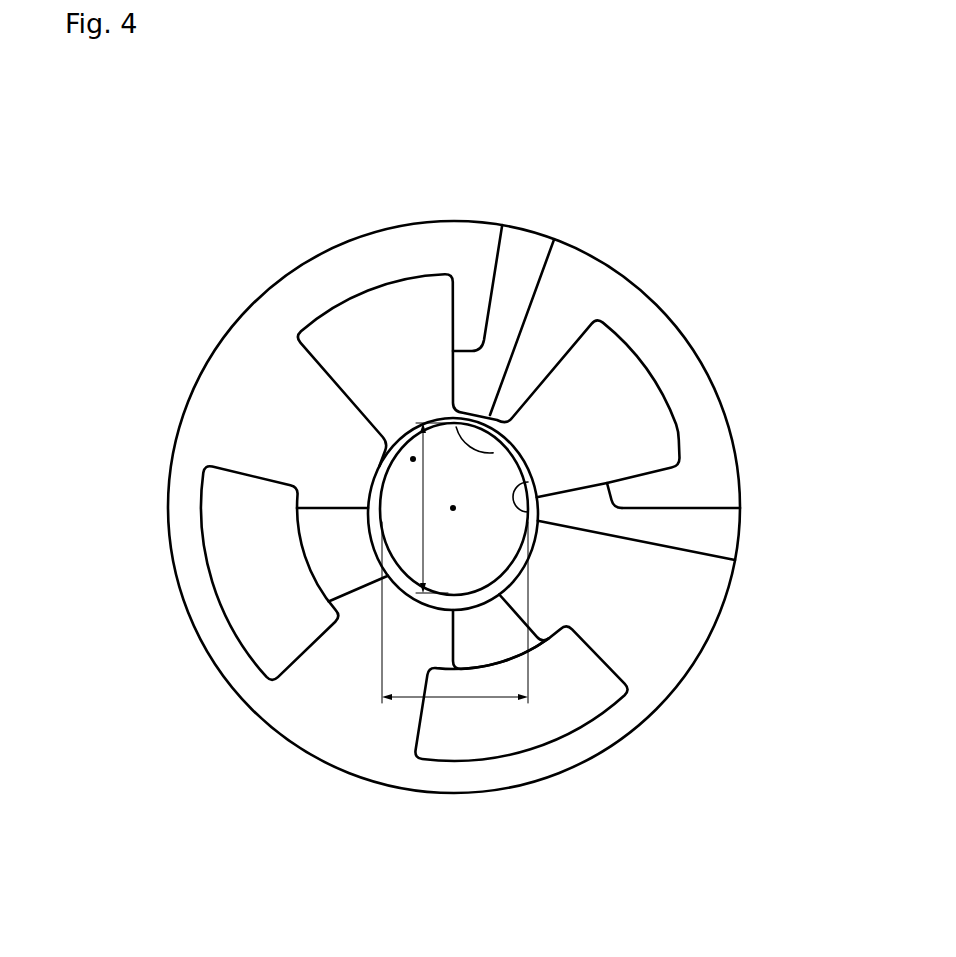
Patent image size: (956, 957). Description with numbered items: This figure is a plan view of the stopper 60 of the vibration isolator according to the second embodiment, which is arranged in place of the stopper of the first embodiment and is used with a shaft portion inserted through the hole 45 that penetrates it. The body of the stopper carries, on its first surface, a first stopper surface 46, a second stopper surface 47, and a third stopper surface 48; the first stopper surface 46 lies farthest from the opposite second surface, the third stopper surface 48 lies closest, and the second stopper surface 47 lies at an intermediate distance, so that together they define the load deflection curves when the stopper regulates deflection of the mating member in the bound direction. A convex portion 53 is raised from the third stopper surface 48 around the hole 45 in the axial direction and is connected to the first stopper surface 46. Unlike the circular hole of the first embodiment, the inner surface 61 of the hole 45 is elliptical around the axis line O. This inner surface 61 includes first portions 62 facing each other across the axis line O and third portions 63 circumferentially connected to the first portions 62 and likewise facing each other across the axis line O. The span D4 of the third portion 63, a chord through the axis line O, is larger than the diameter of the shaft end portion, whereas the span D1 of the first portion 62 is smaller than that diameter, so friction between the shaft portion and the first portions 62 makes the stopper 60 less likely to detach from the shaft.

The stopper 60 is at (656, 150).
The convex portion 53 is at (377, 466).
The hole 45 is at (413, 458).
The third portion 63 is at (505, 447).
The first portion 62 is at (530, 480).
The inner surface 61 is at (600, 410).
The first stopper surface 46 is at (617, 383).
The second stopper surface 47 is at (257, 417).
The third stopper surface 48 is at (710, 532).
The axis line O is at (456, 512).
The span of the third portion D4 is at (423, 508).
The span of the first portion D1 is at (453, 698).